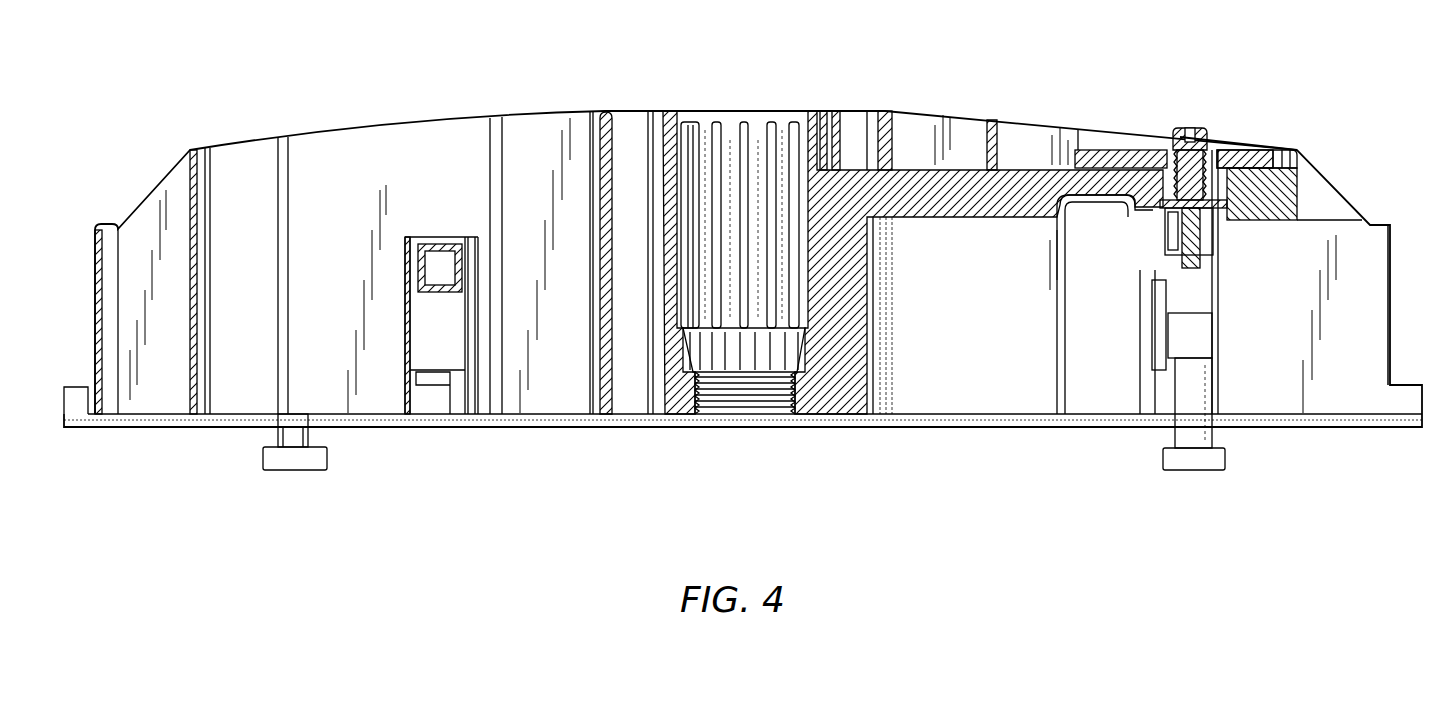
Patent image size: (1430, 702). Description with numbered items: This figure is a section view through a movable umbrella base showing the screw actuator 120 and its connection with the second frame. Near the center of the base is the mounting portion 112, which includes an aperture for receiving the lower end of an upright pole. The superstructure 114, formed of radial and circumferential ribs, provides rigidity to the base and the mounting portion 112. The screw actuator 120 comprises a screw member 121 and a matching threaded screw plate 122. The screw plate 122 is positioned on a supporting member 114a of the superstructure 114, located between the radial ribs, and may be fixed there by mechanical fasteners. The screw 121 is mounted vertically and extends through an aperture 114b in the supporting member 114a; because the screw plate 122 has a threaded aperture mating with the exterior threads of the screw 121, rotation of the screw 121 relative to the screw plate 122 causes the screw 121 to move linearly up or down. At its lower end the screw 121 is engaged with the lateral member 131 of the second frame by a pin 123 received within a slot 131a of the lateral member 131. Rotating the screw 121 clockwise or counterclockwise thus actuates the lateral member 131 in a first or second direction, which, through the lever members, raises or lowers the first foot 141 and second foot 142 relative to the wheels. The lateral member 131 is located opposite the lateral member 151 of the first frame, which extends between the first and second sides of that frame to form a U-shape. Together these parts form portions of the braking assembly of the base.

The mounting portion 112 is at (703, 86).
The superstructure 114 is at (850, 178).
The supporting member 114a is at (1280, 196).
The aperture 114b is at (1216, 163).
The screw actuator 120 is at (1272, 133).
The screw member 121 is at (1180, 152).
The screw plate 122 is at (1112, 162).
The pin 123 is at (1166, 244).
The lateral member 131 is at (1229, 252).
The slot 131a is at (1243, 224).
The first foot 141 is at (1163, 462).
The second foot 142 is at (328, 460).
The lateral member 151 is at (436, 236).